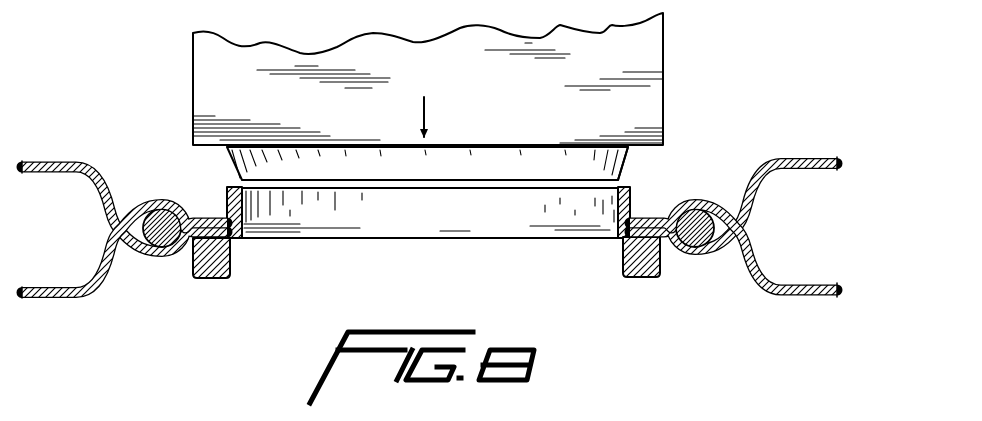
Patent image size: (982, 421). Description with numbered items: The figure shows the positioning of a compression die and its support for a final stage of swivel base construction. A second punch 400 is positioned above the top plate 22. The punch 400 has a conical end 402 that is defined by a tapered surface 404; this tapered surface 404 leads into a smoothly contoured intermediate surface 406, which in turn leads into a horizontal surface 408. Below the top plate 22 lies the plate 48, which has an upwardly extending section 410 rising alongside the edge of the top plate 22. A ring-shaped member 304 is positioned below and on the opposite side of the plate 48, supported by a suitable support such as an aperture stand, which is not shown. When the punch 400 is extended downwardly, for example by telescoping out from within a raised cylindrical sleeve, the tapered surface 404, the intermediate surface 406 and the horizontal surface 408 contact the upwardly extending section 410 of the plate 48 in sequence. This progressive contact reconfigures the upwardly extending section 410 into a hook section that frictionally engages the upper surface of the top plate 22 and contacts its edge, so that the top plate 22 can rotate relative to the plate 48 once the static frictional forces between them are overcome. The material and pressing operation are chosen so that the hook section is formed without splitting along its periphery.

The second punch 400 is at (518, 110).
The horizontal surface 408 is at (665, 147).
The smoothly contoured intermediate surface 406 is at (633, 148).
The tapered surface 404 is at (622, 160).
The conical end 402 is at (523, 182).
The upwardly extending section 410 is at (618, 208).
The ring-shaped member 304 is at (202, 278).
The top plate 22 is at (820, 153).
The plate 48 is at (824, 301).